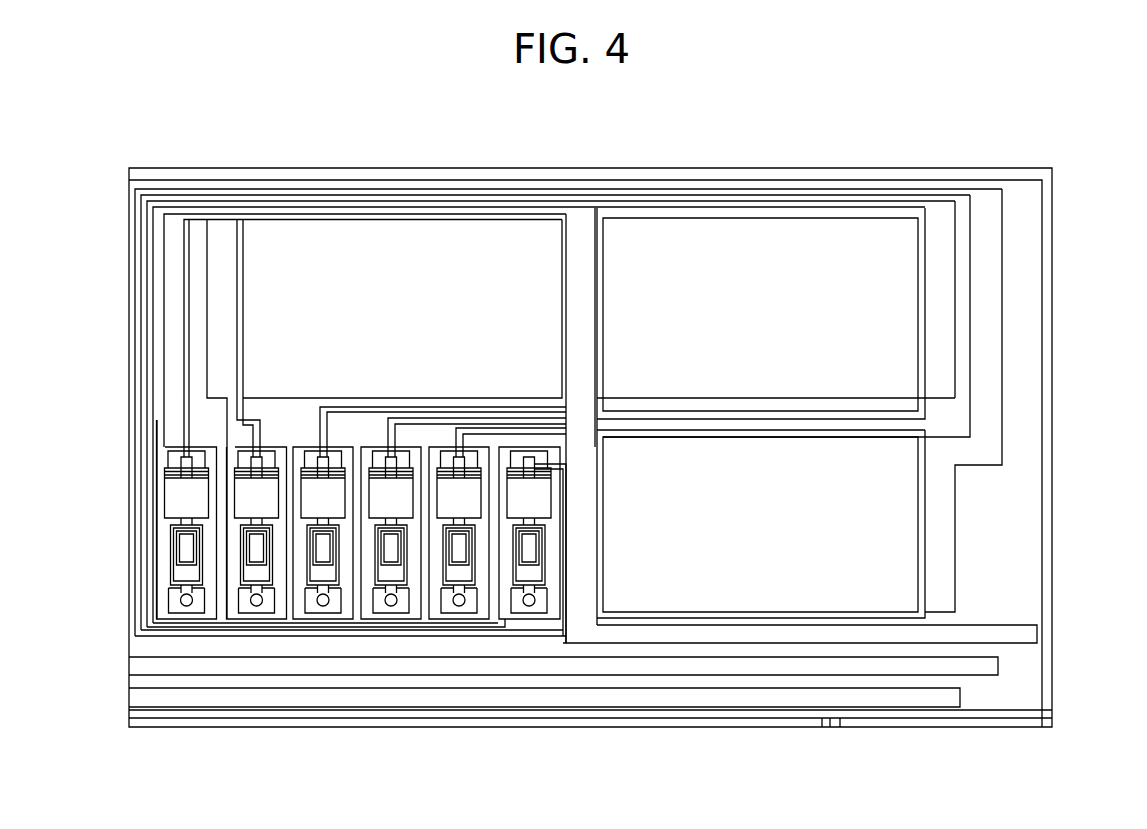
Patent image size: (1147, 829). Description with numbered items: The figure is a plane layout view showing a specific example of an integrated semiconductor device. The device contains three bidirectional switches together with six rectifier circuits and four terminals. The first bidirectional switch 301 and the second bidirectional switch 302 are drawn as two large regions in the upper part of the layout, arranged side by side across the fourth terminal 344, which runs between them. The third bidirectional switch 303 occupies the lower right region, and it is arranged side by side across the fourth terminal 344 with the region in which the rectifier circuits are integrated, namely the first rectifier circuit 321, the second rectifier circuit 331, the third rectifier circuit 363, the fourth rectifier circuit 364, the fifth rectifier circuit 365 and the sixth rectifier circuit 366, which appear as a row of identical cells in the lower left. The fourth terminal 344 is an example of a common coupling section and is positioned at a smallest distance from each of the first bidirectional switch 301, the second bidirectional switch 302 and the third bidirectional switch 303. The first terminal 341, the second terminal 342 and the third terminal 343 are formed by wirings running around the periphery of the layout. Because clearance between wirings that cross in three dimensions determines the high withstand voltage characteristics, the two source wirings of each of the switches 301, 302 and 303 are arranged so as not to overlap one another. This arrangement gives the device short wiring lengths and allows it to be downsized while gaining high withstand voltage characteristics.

The first bidirectional switch 301 is at (350, 278).
The second bidirectional switch 302 is at (748, 278).
The third bidirectional switch 303 is at (885, 555).
The first rectifier circuit 321 is at (157, 607).
The second rectifier circuit 331 is at (257, 607).
The first terminal 341 is at (226, 290).
The second terminal 342 is at (943, 226).
The third terminal 343 is at (985, 445).
The fourth terminal 344 is at (583, 230).
The third rectifier circuit 363 is at (323, 613).
The fourth rectifier circuit 364 is at (388, 605).
The fifth rectifier circuit 365 is at (457, 605).
The sixth rectifier circuit 366 is at (535, 575).